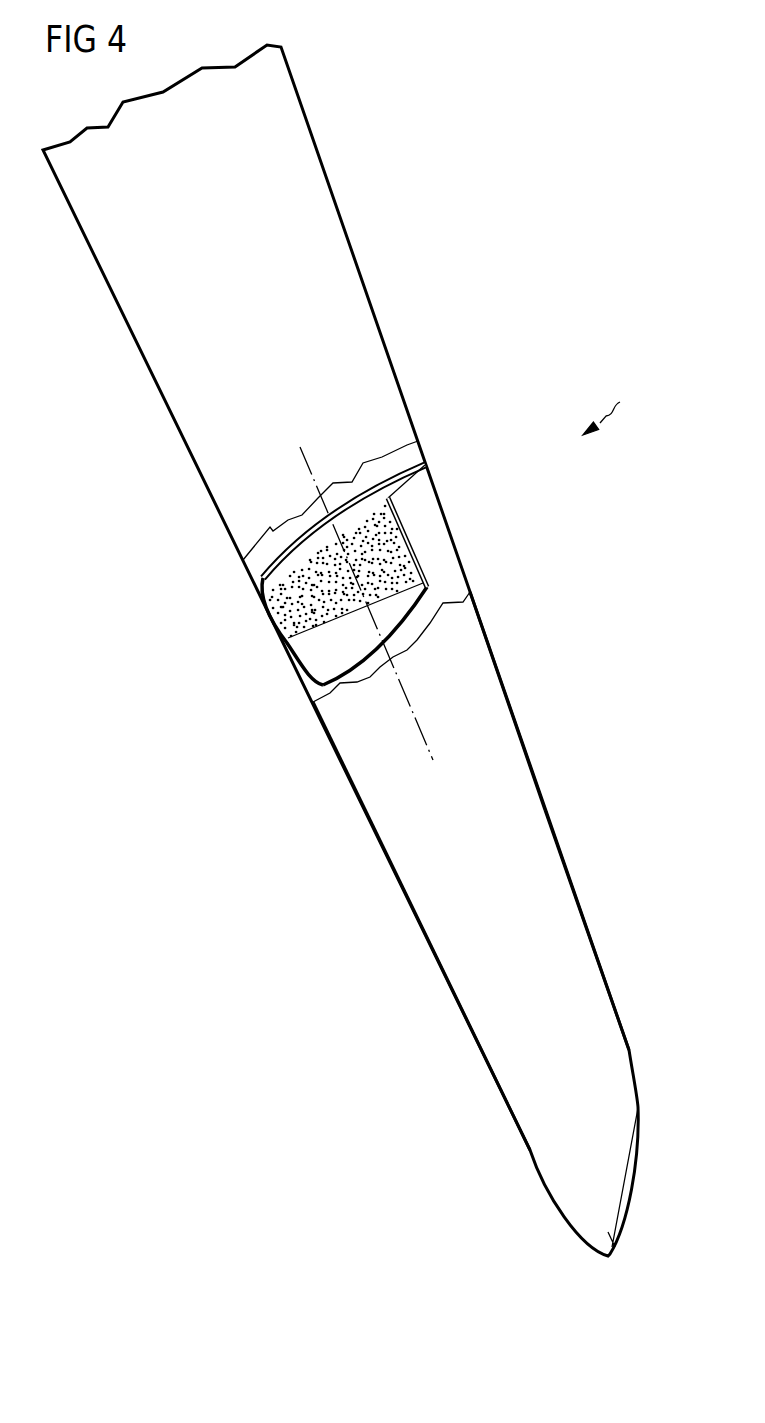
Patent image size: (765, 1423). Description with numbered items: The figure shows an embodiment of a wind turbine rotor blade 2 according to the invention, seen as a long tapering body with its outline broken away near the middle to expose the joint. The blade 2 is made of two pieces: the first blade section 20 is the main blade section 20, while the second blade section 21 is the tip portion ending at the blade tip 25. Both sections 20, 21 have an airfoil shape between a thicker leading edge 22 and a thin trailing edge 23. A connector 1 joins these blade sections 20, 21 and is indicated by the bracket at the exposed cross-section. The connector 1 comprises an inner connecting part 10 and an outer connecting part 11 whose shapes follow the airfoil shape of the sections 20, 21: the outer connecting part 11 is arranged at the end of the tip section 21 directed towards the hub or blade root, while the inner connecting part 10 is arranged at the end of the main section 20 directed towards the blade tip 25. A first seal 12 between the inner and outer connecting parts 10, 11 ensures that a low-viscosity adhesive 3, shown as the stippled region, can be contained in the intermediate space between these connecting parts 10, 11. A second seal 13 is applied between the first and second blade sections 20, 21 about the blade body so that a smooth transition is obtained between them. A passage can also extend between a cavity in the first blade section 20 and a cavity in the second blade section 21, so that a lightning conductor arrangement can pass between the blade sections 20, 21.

The connector 1 is at (363, 600).
The wind turbine rotor blade 2 is at (611, 410).
The low-viscosity adhesive 3 is at (341, 572).
The inner connecting part 10 is at (351, 660).
The outer connecting part 11 is at (294, 637).
The first seal 12 is at (410, 577).
The second seal 13 is at (400, 475).
The first blade section 20 is at (372, 334).
The second blade section 21 is at (527, 797).
The leading edge 22 is at (395, 882).
The trailing edge 23 is at (513, 710).
The blade tip 25 is at (617, 1247).